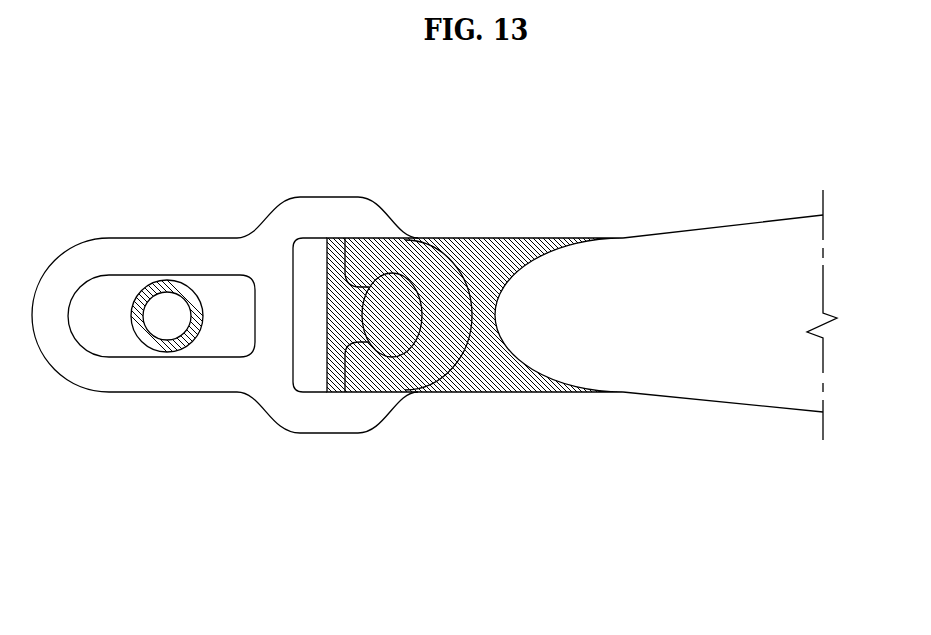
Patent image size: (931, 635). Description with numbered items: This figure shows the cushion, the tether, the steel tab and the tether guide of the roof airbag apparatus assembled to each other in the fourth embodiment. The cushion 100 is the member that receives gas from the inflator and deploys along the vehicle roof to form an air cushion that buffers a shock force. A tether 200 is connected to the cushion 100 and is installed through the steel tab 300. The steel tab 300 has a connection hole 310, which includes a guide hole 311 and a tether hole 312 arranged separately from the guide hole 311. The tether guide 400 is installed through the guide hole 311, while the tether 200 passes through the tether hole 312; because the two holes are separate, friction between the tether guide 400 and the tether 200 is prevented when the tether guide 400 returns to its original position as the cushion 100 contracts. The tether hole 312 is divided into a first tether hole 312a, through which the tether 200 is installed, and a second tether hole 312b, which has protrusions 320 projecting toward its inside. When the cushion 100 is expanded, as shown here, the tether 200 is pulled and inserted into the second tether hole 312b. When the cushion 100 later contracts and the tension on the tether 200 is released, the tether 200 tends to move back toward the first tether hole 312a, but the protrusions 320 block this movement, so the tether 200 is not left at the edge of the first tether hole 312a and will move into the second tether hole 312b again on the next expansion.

The cushion 100 is at (657, 257).
The tether 200 is at (479, 270).
The steel tab 300 is at (176, 216).
The connection hole 310 is at (113, 487).
The guide hole 311 is at (131, 356).
The tether hole 312 is at (252, 518).
The first tether hole 312a is at (326, 378).
The second tether hole 312b is at (378, 345).
The protrusion 320 is at (361, 342).
The tether guide 400 is at (153, 284).